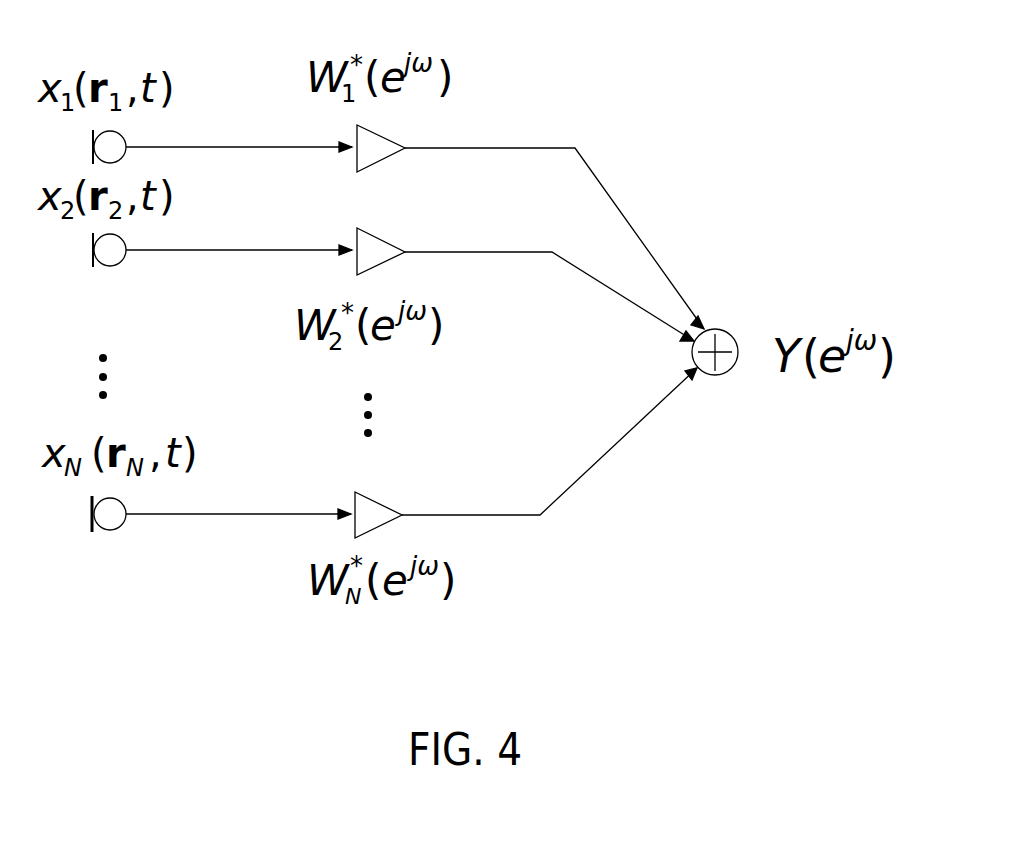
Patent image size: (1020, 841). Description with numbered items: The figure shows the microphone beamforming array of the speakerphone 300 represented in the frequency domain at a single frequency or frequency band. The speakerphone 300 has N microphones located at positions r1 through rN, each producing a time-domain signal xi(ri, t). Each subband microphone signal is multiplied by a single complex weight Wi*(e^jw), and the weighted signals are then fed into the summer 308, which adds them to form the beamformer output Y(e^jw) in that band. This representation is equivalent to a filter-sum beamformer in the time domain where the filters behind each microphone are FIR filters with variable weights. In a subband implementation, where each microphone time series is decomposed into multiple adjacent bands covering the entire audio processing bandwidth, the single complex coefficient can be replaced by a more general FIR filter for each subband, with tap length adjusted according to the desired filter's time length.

The speakerphone 300 is at (147, 622).
The summer 308 is at (734, 338).